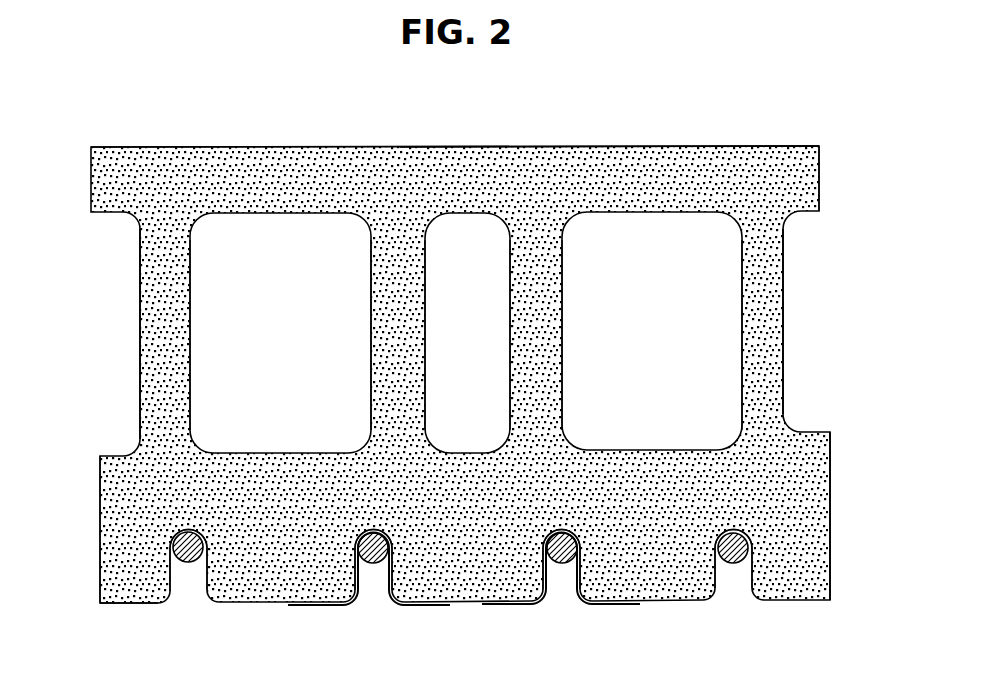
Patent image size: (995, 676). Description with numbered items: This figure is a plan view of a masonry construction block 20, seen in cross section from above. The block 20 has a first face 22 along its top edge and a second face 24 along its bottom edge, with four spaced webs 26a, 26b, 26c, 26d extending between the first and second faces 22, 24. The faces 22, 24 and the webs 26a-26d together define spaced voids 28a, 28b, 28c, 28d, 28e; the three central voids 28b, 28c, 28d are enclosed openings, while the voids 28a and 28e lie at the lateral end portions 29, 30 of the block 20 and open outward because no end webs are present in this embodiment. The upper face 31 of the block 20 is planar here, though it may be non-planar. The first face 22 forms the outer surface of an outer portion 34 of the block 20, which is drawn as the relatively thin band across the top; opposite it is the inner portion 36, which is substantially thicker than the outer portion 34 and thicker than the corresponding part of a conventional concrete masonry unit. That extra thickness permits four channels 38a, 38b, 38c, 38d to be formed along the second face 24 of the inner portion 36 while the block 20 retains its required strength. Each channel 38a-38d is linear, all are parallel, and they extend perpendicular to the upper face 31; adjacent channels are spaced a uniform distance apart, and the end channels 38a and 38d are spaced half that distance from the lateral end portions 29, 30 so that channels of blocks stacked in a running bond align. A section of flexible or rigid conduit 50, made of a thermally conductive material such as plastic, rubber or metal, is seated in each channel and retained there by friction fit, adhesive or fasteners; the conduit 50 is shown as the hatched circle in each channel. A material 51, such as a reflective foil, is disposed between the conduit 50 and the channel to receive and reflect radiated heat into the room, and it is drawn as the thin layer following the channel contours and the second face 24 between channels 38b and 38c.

The masonry construction block 20 is at (298, 108).
The first face 22 is at (183, 147).
The second face 24 is at (115, 603).
The spaced web 26a is at (186, 332).
The spaced web 26b is at (378, 348).
The spaced web 26c is at (555, 285).
The spaced web 26d is at (753, 308).
The spaced void 28a is at (125, 318).
The spaced void 28b is at (298, 286).
The spaced void 28c is at (482, 277).
The spaced void 28d is at (655, 441).
The spaced void 28e is at (797, 265).
The lateral end portion 29 is at (100, 493).
The lateral end portion 30 is at (832, 448).
The upper face 31 is at (620, 180).
The outer portion 34 is at (810, 178).
The inner portion 36 is at (827, 560).
The channel 38a is at (187, 577).
The channel 38b is at (373, 578).
The channel 38c is at (557, 572).
The channel 38d is at (737, 572).
The conduit 50 is at (367, 567).
The material 51 is at (430, 610).